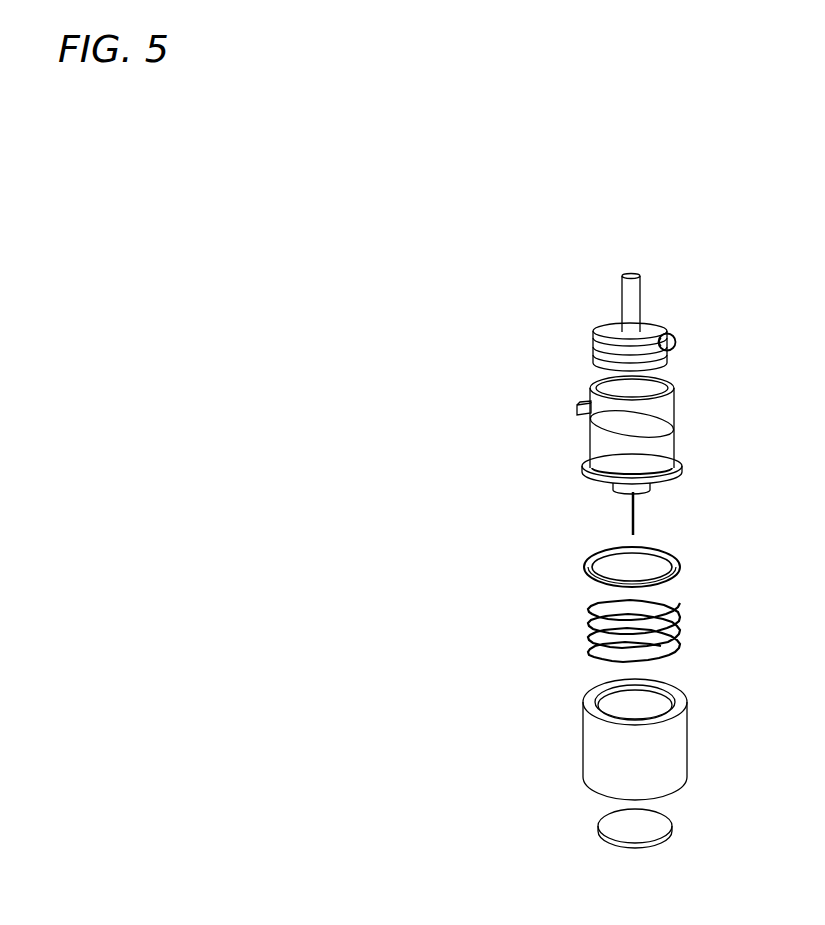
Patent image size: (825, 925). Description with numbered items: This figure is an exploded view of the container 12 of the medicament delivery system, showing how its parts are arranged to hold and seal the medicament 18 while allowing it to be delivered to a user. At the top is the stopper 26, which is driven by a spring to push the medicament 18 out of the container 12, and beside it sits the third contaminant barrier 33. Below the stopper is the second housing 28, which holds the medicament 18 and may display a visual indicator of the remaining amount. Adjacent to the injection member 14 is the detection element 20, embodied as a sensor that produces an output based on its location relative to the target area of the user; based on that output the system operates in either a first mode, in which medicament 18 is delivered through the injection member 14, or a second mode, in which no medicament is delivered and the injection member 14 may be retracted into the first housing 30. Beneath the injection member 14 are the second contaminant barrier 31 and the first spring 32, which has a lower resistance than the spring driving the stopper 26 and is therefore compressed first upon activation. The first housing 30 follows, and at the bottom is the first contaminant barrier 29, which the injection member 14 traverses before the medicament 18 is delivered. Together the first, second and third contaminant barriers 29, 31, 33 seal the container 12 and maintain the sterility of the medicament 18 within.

The container 12 is at (585, 276).
The injection member 14 is at (634, 516).
The medicament 18 is at (656, 452).
The detection element 20 is at (617, 487).
The stopper 26 is at (650, 330).
The second housing 28 is at (675, 403).
The first contaminant barrier 29 is at (670, 826).
The first housing 30 is at (688, 733).
The second contaminant barrier 31 is at (680, 564).
The first spring 32 is at (683, 603).
The third contaminant barrier 33 is at (678, 341).